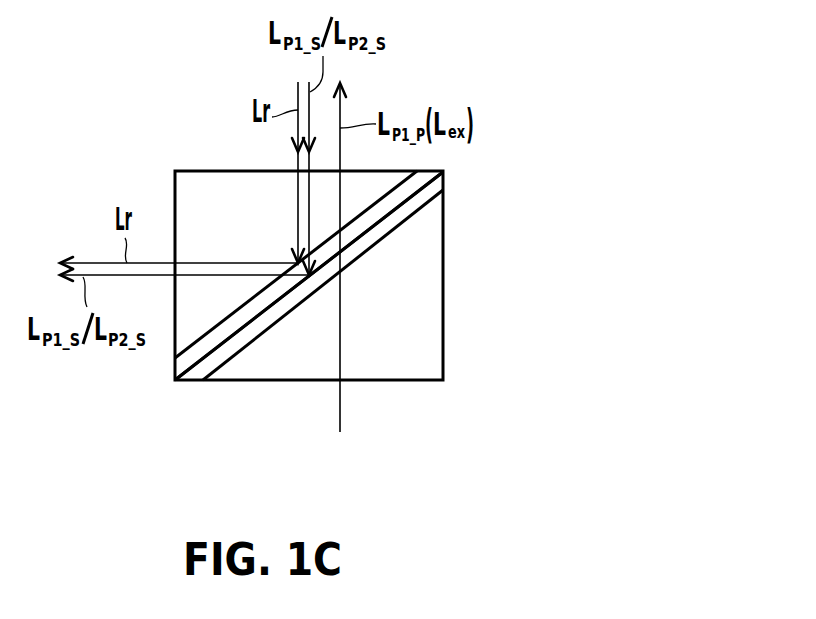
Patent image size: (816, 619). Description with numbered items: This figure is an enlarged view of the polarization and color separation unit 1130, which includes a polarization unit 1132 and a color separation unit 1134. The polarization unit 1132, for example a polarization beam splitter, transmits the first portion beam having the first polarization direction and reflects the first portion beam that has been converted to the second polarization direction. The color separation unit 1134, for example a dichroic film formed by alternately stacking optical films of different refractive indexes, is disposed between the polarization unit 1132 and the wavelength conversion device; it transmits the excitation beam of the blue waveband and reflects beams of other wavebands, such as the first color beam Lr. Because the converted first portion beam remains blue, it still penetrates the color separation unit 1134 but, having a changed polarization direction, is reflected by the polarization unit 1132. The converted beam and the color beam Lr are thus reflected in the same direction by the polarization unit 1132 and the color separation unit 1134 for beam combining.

The polarization and color separation unit 1130 is at (450, 470).
The polarization unit 1132 is at (248, 333).
The color separation unit 1134 is at (210, 338).